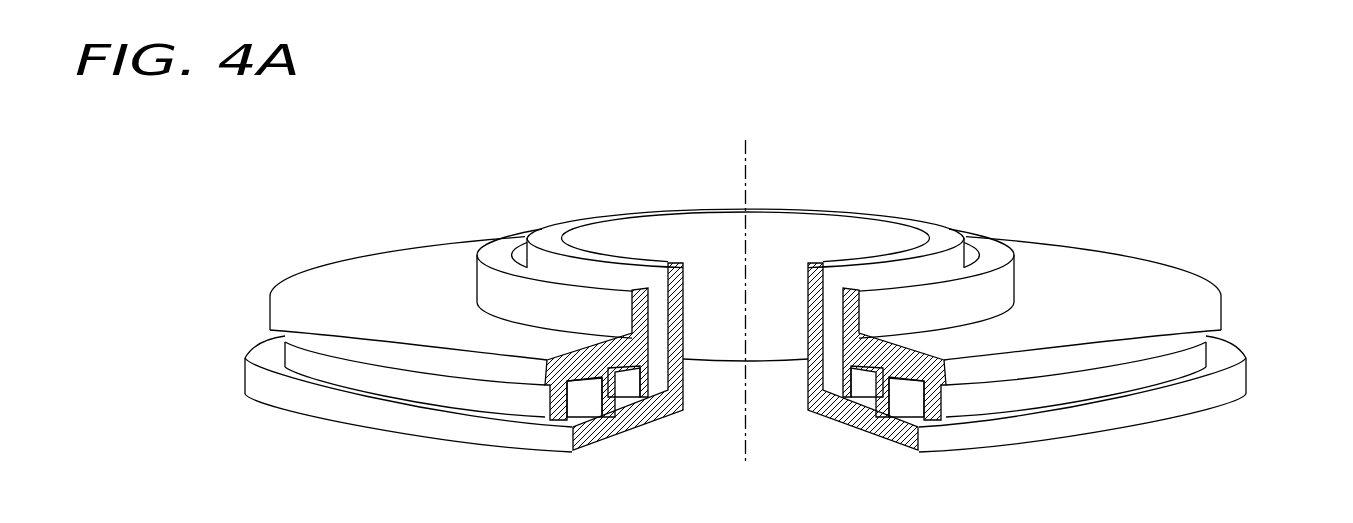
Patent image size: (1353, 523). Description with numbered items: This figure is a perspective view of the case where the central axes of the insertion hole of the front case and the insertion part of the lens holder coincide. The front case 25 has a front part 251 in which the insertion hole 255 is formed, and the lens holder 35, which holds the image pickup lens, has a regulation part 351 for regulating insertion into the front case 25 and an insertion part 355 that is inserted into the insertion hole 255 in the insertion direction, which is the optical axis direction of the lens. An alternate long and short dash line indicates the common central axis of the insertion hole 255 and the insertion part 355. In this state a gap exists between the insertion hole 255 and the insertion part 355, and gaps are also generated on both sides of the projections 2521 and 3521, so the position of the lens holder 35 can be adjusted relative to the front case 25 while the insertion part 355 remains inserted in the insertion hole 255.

The front case 25 is at (780, 328).
The front part 251 is at (1107, 290).
The projection 2521 is at (563, 400).
The insertion hole 255 is at (973, 252).
The lens holder 35 is at (789, 328).
The regulation part 351 is at (1073, 422).
The projection 3521 is at (701, 403).
The insertion part 355 is at (868, 212).